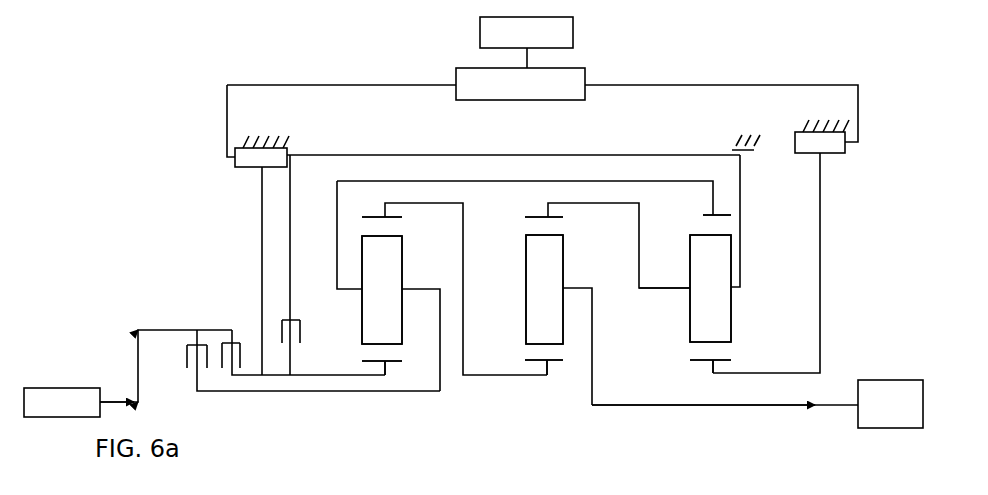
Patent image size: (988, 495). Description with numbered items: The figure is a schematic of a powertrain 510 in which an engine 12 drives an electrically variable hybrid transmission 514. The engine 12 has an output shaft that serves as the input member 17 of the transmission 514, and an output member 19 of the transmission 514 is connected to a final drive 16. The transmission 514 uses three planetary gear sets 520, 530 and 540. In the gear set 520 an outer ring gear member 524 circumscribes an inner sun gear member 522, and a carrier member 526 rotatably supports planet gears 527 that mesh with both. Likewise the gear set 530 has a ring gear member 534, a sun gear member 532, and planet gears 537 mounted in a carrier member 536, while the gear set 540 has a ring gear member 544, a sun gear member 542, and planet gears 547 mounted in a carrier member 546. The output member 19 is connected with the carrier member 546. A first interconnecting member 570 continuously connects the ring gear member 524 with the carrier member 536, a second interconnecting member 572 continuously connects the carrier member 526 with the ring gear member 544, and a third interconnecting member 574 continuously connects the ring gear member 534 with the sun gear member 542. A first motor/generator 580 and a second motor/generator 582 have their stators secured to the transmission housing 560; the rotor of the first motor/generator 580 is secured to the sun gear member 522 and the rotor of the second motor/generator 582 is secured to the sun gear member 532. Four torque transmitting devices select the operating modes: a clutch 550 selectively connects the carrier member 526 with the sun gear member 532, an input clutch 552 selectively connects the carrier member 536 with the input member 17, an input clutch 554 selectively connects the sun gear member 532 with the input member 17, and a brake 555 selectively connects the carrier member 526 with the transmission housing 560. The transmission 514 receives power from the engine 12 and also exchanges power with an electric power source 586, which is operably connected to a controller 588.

The engine 12 is at (55, 388).
The final drive 16 is at (883, 380).
The input member 17 is at (138, 346).
The output member 19 is at (797, 406).
The powertrain 510 is at (88, 132).
The electrically variable transmission 514 is at (88, 185).
The planetary gear set 520 is at (710, 364).
The sun gear member 522 is at (731, 362).
The ring gear member 524 is at (698, 226).
The carrier member 526 is at (688, 291).
The planet gears 527 is at (710, 288).
The planetary gear set 530 is at (383, 364).
The sun gear member 532 is at (401, 362).
The ring gear member 534 is at (398, 218).
The carrier member 536 is at (404, 288).
The planet gears 537 is at (382, 290).
The planetary gear set 540 is at (545, 364).
The sun gear member 542 is at (563, 362).
The ring gear member 544 is at (535, 218).
The carrier member 546 is at (568, 288).
The planet gears 547 is at (544, 289).
The clutch 550 is at (294, 320).
The input clutch 552 is at (192, 371).
The input clutch 554 is at (221, 341).
The brake 555 is at (726, 147).
The transmission housing 560 is at (283, 146).
The first interconnecting member 570 is at (545, 181).
The second interconnecting member 572 is at (629, 203).
The third interconnecting member 574 is at (451, 202).
The first motor/generator 580 is at (878, 168).
The second motor/generator 582 is at (233, 163).
The electric power source 586 is at (574, 33).
The controller 588 is at (587, 80).